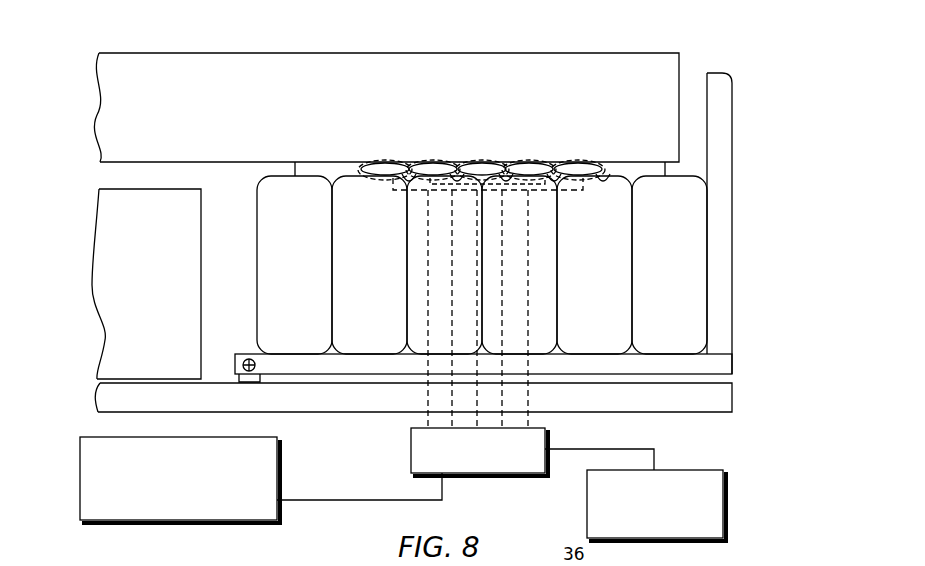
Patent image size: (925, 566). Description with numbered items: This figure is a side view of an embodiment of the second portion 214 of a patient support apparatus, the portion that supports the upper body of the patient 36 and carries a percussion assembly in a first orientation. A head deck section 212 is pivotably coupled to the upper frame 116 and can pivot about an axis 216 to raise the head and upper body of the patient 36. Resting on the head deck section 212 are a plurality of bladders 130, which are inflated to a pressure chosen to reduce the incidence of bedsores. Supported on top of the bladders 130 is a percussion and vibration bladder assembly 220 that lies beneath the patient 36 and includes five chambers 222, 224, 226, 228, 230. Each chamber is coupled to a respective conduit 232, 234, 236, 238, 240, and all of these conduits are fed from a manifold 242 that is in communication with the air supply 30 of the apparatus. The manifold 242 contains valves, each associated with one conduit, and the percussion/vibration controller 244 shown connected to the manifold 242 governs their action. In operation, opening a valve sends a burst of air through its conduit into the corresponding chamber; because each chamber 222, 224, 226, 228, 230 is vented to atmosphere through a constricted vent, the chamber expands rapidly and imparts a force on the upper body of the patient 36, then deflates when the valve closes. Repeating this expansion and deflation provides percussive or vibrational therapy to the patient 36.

The patient 36 is at (562, 67).
The percussion and vibration bladder assembly 220 is at (296, 155).
The chamber 222 is at (396, 162).
The chamber 224 is at (446, 158).
The chamber 226 is at (495, 157).
The chamber 228 is at (546, 157).
The chamber 230 is at (582, 157).
The bladders 130 is at (320, 257).
The second portion 214 is at (128, 276).
The axis 216 is at (240, 352).
The head deck section 212 is at (725, 362).
The upper frame 116 is at (725, 398).
The conduit 232 is at (428, 368).
The conduit 234 is at (452, 388).
The conduit 236 is at (477, 405).
The conduit 238 is at (502, 390).
The conduit 240 is at (528, 364).
The percussion/vibration controller 244 is at (278, 458).
The manifold 242 is at (513, 473).
The air supply 30 is at (725, 488).